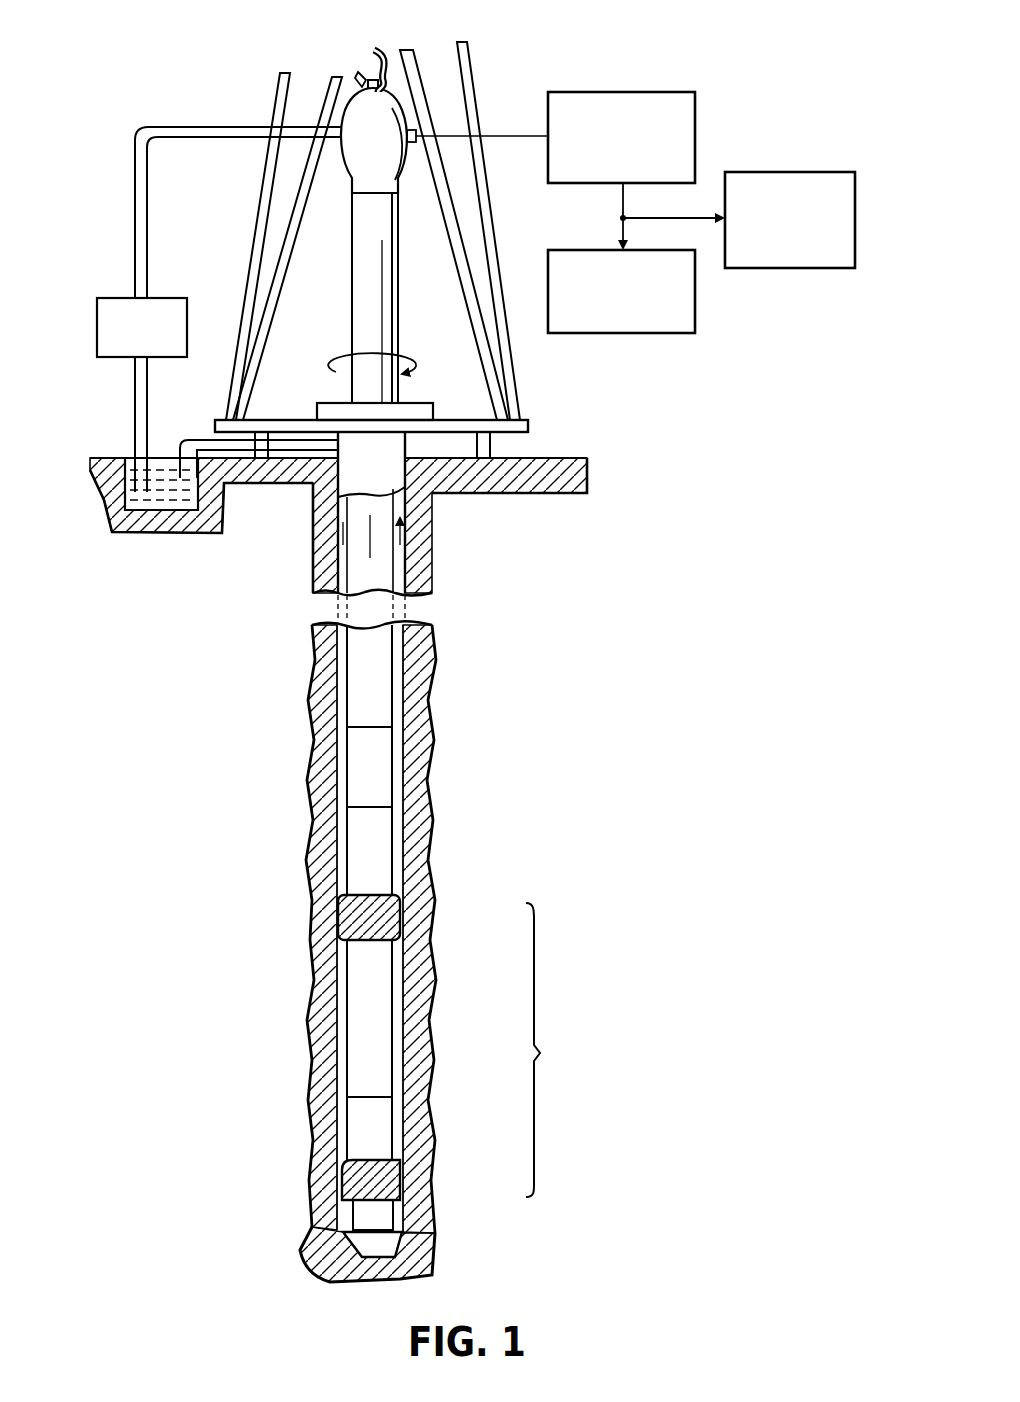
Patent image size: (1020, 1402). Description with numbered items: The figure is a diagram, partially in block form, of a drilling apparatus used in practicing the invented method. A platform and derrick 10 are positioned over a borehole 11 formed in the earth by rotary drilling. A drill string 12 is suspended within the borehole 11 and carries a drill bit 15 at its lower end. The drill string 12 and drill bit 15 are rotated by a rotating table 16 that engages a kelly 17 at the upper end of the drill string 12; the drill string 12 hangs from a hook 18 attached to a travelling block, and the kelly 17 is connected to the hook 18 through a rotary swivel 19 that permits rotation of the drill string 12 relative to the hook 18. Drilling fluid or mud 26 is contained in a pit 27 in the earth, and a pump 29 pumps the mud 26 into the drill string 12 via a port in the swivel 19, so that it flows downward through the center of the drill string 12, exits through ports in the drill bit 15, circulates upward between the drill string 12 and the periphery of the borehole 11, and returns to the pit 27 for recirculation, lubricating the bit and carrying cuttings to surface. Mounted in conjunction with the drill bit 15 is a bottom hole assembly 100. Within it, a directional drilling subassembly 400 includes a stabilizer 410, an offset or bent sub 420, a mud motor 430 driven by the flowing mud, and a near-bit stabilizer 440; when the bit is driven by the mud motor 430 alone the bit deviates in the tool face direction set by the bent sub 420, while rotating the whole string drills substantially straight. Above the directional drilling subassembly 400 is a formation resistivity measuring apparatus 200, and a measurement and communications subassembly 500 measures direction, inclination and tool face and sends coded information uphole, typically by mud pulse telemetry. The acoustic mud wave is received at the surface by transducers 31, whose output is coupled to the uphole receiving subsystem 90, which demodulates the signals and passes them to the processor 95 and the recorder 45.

The platform and derrick 10 is at (556, 418).
The borehole 11 is at (398, 667).
The drill string 12 is at (373, 705).
The drill bit 15 is at (370, 1245).
The rotating table 16 is at (425, 406).
The kelly 17 is at (392, 282).
The hook 18 is at (372, 51).
The rotary swivel 19 is at (348, 172).
The drilling fluid or mud 26 is at (167, 498).
The pit 27 is at (105, 497).
The pump 29 is at (172, 298).
The transducers 31 is at (413, 150).
The recorder 45 is at (787, 175).
The uphole receiving subsystem 90 is at (628, 92).
The processor 95 is at (660, 334).
The bottom hole assembly 100 is at (266, 726).
The formation resistivity measuring apparatus 200 is at (380, 845).
The directional drilling subassembly 400 is at (540, 1053).
The stabilizer 410 is at (347, 910).
The offset or bent sub 420 is at (375, 1033).
The mud motor 430 is at (368, 1133).
The near-bit stabilizer 440 is at (388, 1188).
The measurement and communications subassembly 500 is at (378, 762).